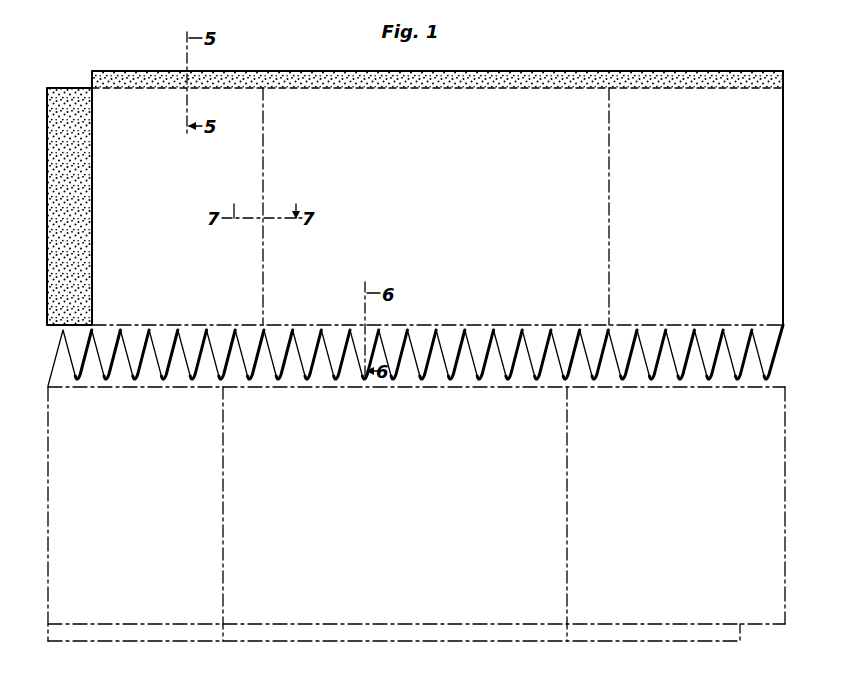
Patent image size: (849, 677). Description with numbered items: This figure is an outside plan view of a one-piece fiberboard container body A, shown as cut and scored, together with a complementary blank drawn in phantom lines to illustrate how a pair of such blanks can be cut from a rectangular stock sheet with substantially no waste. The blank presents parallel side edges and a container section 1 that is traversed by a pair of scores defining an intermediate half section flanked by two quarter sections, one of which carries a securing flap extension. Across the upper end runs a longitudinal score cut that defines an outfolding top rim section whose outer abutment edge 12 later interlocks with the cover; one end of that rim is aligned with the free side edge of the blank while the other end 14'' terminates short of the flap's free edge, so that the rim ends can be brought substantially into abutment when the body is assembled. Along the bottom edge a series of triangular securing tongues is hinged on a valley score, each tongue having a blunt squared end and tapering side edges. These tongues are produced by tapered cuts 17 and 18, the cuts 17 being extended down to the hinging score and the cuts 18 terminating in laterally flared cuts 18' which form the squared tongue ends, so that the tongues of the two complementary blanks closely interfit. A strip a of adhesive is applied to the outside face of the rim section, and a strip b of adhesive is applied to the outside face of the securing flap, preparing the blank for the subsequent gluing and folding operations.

The container section 1 is at (786, 113).
The abutment edge 12 is at (349, 73).
The end of rim section 14'' is at (112, 51).
The tapered cuts 17 is at (310, 390).
The tapered cuts 18 is at (360, 392).
The flared cuts 18' is at (346, 308).
The strip of adhesive a is at (550, 74).
The strip of adhesive b is at (60, 242).
The container body A is at (780, 58).